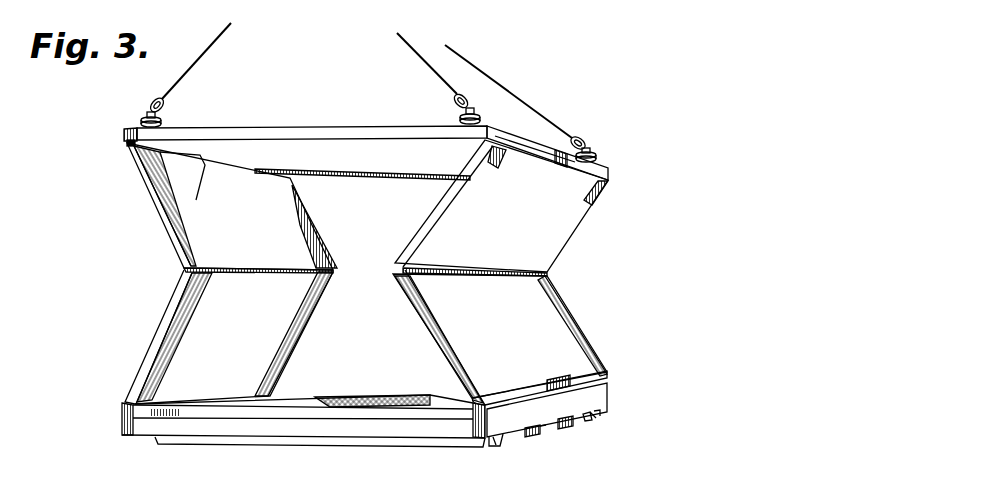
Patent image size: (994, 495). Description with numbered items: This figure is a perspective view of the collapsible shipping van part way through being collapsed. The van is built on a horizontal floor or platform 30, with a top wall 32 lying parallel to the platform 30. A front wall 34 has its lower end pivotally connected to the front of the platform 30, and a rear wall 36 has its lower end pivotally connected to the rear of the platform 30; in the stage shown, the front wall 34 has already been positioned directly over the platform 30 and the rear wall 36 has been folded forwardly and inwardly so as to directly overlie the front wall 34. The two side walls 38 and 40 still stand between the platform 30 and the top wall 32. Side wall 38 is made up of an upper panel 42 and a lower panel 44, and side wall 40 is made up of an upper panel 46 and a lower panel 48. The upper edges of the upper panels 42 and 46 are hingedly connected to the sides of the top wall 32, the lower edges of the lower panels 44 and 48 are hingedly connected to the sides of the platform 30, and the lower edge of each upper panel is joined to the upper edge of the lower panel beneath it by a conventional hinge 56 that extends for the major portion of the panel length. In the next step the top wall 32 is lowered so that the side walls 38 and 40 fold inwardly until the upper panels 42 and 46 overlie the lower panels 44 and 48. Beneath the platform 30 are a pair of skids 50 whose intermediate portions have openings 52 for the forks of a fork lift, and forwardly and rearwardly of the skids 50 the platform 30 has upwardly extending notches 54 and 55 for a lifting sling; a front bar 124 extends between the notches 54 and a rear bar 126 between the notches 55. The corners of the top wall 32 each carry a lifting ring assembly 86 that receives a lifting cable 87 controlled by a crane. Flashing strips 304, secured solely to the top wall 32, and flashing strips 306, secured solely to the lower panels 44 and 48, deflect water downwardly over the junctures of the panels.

The platform 30 is at (415, 440).
The top wall 32 is at (340, 118).
The front wall 34 is at (290, 427).
The rear wall 36 is at (316, 396).
The side wall 38 is at (158, 214).
The side wall 40 is at (578, 228).
The upper panel 42 is at (193, 227).
The lower panel 44 is at (172, 333).
The upper panel 46 is at (583, 200).
The lower panel 48 is at (570, 330).
The skids 50 is at (512, 442).
The openings 52 is at (541, 434).
The notches 54 is at (493, 446).
The notches 55 is at (599, 413).
The hinge 56 is at (176, 269).
The lifting ring assembly 86 is at (148, 122).
The lifting cable 87 is at (186, 74).
The bar 124 is at (501, 447).
The bar 126 is at (596, 418).
The flashing strip 304 is at (610, 168).
The flashing strip 306 is at (610, 381).